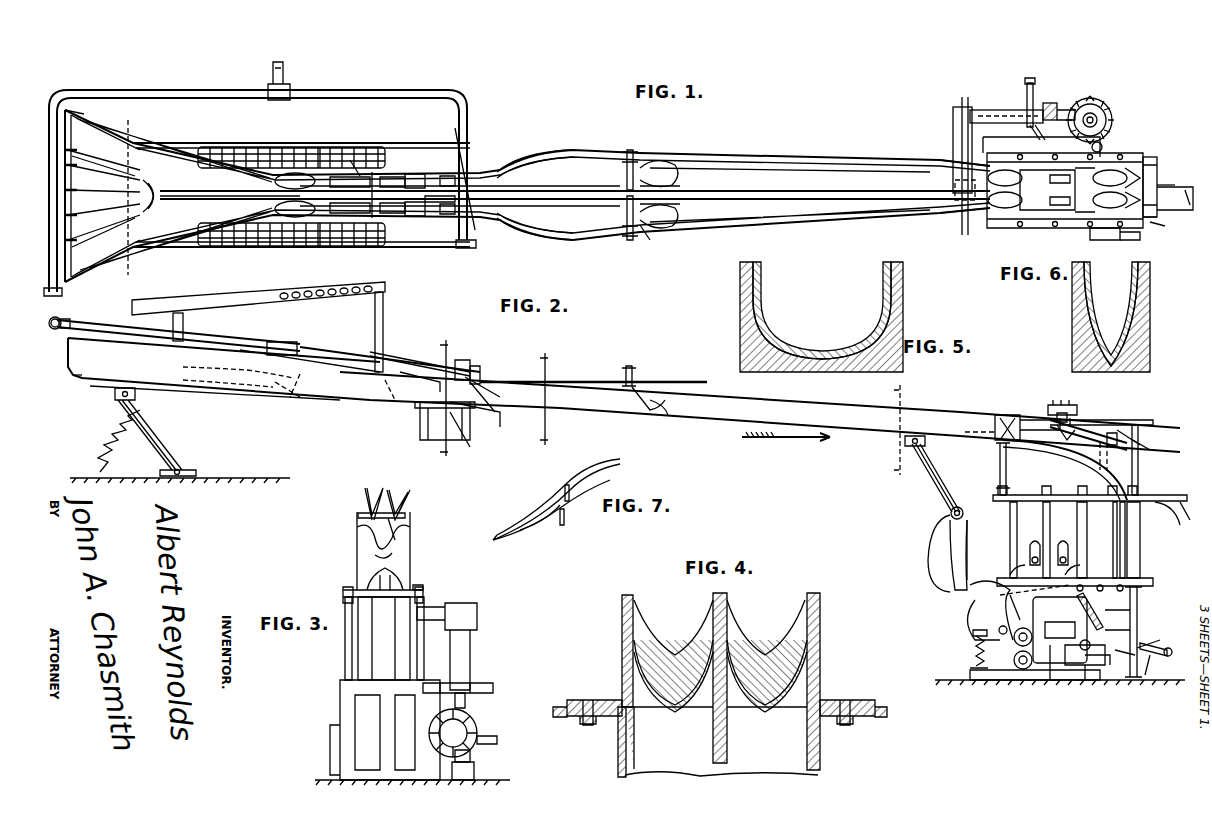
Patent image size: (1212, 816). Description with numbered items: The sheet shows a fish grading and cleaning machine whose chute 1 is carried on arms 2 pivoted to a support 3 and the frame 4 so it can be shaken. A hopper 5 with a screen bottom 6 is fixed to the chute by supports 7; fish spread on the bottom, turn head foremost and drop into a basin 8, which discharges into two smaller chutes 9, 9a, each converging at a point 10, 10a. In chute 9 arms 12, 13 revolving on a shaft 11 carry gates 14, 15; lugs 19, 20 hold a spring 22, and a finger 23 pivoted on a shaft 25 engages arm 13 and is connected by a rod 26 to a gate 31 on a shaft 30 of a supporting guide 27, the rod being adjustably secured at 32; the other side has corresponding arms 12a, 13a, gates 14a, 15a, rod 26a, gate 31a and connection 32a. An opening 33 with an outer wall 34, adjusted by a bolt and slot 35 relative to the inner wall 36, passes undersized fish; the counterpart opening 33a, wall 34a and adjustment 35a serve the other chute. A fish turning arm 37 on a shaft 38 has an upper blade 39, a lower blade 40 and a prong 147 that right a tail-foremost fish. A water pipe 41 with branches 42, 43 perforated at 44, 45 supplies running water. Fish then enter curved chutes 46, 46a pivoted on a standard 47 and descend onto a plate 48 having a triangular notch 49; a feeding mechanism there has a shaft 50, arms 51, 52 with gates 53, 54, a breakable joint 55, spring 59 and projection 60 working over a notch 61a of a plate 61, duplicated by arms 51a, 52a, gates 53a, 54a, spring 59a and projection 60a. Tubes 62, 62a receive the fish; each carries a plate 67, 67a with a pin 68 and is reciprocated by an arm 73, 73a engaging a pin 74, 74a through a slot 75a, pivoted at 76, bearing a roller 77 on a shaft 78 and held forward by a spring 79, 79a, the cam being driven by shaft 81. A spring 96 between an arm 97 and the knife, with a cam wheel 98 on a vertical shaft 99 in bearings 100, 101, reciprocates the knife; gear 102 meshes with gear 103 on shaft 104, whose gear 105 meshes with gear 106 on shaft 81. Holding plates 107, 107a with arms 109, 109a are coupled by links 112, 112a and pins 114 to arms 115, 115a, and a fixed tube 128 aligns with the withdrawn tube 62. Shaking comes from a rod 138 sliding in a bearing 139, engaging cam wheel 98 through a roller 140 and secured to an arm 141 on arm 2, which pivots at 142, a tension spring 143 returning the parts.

In FIG. 2, the chute 1 is at (846, 432).
In FIG. 4, the chute 1 is at (622, 632).
In FIG. 5, the chute 1 is at (740, 341).
In FIG. 6, the chute 1 is at (1150, 336).
In FIG. 2, the arms 2 is at (925, 482).
In FIG. 2, the support 3 is at (220, 478).
In FIG. 1, the frame 4 is at (1003, 228).
In FIG. 2, the frame 4 is at (1010, 531).
In FIG. 3, the frame 4 is at (345, 640).
In FIG. 1, the hopper 5 is at (340, 176).
In FIG. 2, the hopper 5 is at (544, 400).
In FIG. 1, the screen bottom 6 is at (355, 176).
In FIG. 2, the screen bottom 6 is at (330, 298).
In FIG. 1, the supports 7 is at (380, 218).
In FIG. 2, the supports 7 is at (375, 328).
In FIG. 1, the basin 8 is at (92, 250).
In FIG. 2, the basin 8 is at (90, 380).
In FIG. 1, the chute 9 is at (766, 238).
In FIG. 5, the chute 9 is at (758, 298).
In FIG. 6, the chute 9 is at (1136, 291).
In FIG. 1, the chute 9a is at (766, 140).
In FIG. 1, the point 10 is at (268, 248).
In FIG. 1, the point 10a is at (258, 147).
In FIG. 1, the shaft 11 is at (364, 160).
In FIG. 2, the shaft 11 is at (358, 385).
In FIG. 1, the arm 12 is at (318, 246).
In FIG. 2, the arm 12 is at (323, 392).
In FIG. 1, the arm 12a is at (318, 147).
In FIG. 1, the arm 13 is at (412, 216).
In FIG. 2, the arm 13 is at (455, 365).
In FIG. 1, the arm 13a is at (412, 174).
In FIG. 1, the gate 14 is at (292, 217).
In FIG. 2, the gate 14 is at (300, 397).
In FIG. 1, the gate 14a is at (292, 173).
In FIG. 1, the gate 15 is at (398, 214).
In FIG. 2, the gate 15 is at (395, 400).
In FIG. 1, the gate 15a is at (400, 174).
In FIG. 2, the lug 19 is at (300, 350).
In FIG. 2, the lug 20 is at (398, 352).
In FIG. 2, the spring 22 is at (355, 364).
In FIG. 2, the finger 23 is at (470, 372).
In FIG. 1, the shaft 25 is at (428, 204).
In FIG. 2, the shaft 25 is at (421, 386).
In FIG. 1, the rod 26 is at (562, 240).
In FIG. 2, the rod 26 is at (575, 382).
In FIG. 1, the rod 26a is at (560, 150).
In FIG. 1, the supporting guide 27 is at (678, 178).
In FIG. 1, the shaft 30 is at (649, 239).
In FIG. 2, the shaft 30 is at (645, 387).
In FIG. 1, the gate 31 is at (672, 226).
In FIG. 2, the gate 31 is at (668, 415).
In FIG. 1, the gate 31a is at (672, 165).
In FIG. 1, the adjustable connection 32 is at (628, 240).
In FIG. 2, the adjustable connection 32 is at (629, 368).
In FIG. 1, the adjustable connection 32a is at (630, 150).
In FIG. 1, the opening 33 is at (448, 214).
In FIG. 2, the opening 33 is at (428, 433).
In FIG. 4, the opening 33 is at (673, 686).
In FIG. 1, the opening 33a is at (446, 176).
In FIG. 4, the opening 33a is at (767, 686).
In FIG. 2, the outer side wall 34 is at (470, 433).
In FIG. 4, the outer side wall 34 is at (618, 749).
In FIG. 4, the outer side wall 34a is at (820, 741).
In FIG. 4, the bolt and slot arrangement 35 is at (590, 700).
In FIG. 4, the bolt and slot arrangement 35a is at (845, 700).
In FIG. 4, the inner wall 36 is at (713, 738).
In FIG. 2, the fish turning arm 37 is at (490, 378).
In FIG. 7, the fish turning arm 37 is at (560, 494).
In FIG. 2, the shaft 38 is at (492, 416).
In FIG. 7, the shaft 38 is at (566, 515).
In FIG. 2, the upper blade 39 is at (500, 378).
In FIG. 7, the upper blade 39 is at (596, 462).
In FIG. 2, the lower blade 40 is at (478, 450).
In FIG. 7, the lower blade 40 is at (510, 535).
In FIG. 1, the water pipe 41 is at (215, 90).
In FIG. 2, the water pipe 41 is at (244, 340).
In FIG. 1, the branch 42 is at (80, 138).
In FIG. 2, the branch 42 is at (62, 330).
In FIG. 1, the branch 43 is at (470, 136).
In FIG. 1, the perforations 44 is at (72, 196).
In FIG. 1, the perforations 45 is at (458, 134).
In FIG. 1, the curved chute 46 is at (1000, 210).
In FIG. 2, the curved chute 46 is at (1060, 452).
In FIG. 3, the curved chute 46 is at (366, 494).
In FIG. 1, the curved chute 46a is at (1003, 170).
In FIG. 3, the curved chute 46a is at (408, 508).
In FIG. 2, the standard 47 is at (1000, 467).
In FIG. 1, the plate 48 is at (1157, 160).
In FIG. 2, the plate 48 is at (1170, 496).
In FIG. 3, the plate 48 is at (415, 582).
In FIG. 1, the triangular notch 49 is at (1157, 170).
In FIG. 1, the shaft 50 is at (1055, 212).
In FIG. 2, the shaft 50 is at (1066, 434).
In FIG. 1, the arm 51 is at (1020, 225).
In FIG. 2, the arm 51 is at (1030, 418).
In FIG. 2, the arm 51a is at (1000, 415).
In FIG. 1, the arm 52 is at (1136, 239).
In FIG. 2, the arm 52 is at (1108, 430).
In FIG. 1, the arm 52a is at (1138, 172).
In FIG. 2, the arm 52a is at (1130, 428).
In FIG. 1, the gate 53 is at (1000, 215).
In FIG. 2, the gate 53 is at (995, 420).
In FIG. 1, the gate 53a is at (1000, 165).
In FIG. 2, the gate 53a is at (1010, 415).
In FIG. 1, the gate 54 is at (1118, 212).
In FIG. 2, the gate 54 is at (1130, 445).
In FIG. 1, the gate 54a is at (1120, 172).
In FIG. 2, the gate 54a is at (1110, 462).
In FIG. 2, the breakable joint 55 is at (1057, 400).
In FIG. 1, the spring 59 is at (1080, 218).
In FIG. 2, the spring 59 is at (1065, 413).
In FIG. 2, the spring 59a is at (1078, 420).
In FIG. 1, the projection 60 is at (1153, 226).
In FIG. 2, the projection 60 is at (1153, 420).
In FIG. 3, the projection 60 is at (358, 518).
In FIG. 1, the projection 60a is at (1176, 177).
In FIG. 2, the projection 60a is at (1154, 450).
In FIG. 3, the projection 60a is at (406, 526).
In FIG. 1, the plate 61 is at (1175, 198).
In FIG. 2, the plate 61 is at (1139, 480).
In FIG. 3, the plate 61 is at (410, 546).
In FIG. 3, the notch 61a is at (377, 561).
In FIG. 2, the tube 62 is at (1130, 538).
In FIG. 3, the tube 62 is at (365, 655).
In FIG. 3, the tube 62a is at (410, 645).
In FIG. 1, the plate 67 is at (1165, 228).
In FIG. 2, the plate 67 is at (1167, 513).
In FIG. 3, the plate 67 is at (355, 590).
In FIG. 3, the plate 67a is at (425, 586).
In FIG. 1, the pin 68 is at (1183, 198).
In FIG. 2, the pin 68 is at (1188, 512).
In FIG. 2, the arm 73 is at (970, 626).
In FIG. 2, the arm 73a is at (985, 592).
In FIG. 2, the pin 74 is at (1063, 545).
In FIG. 2, the pin 74a is at (1035, 545).
In FIG. 2, the slot 75a is at (1030, 552).
In FIG. 2, the pivot 76 is at (1025, 670).
In FIG. 3, the pivot 76 is at (330, 760).
In FIG. 2, the roller 77 is at (1022, 607).
In FIG. 2, the shaft 78 is at (996, 622).
In FIG. 2, the spring 79 is at (975, 660).
In FIG. 2, the spring 79a is at (973, 640).
In FIG. 1, the driving shaft 81 is at (1040, 128).
In FIG. 2, the driving shaft 81 is at (1017, 645).
In FIG. 1, the spring 96 is at (1083, 232).
In FIG. 1, the arm 97 is at (1100, 242).
In FIG. 2, the arm 97 is at (1100, 578).
In FIG. 1, the cam wheel 98 is at (1112, 110).
In FIG. 3, the cam wheel 98 is at (478, 683).
In FIG. 1, the vertical shaft 99 is at (1097, 115).
In FIG. 2, the vertical shaft 99 is at (1061, 619).
In FIG. 3, the vertical shaft 99 is at (470, 722).
In FIG. 3, the bearing 100 is at (465, 700).
In FIG. 3, the bearing 101 is at (474, 772).
In FIG. 2, the gear 102 is at (1085, 680).
In FIG. 3, the gear 102 is at (470, 755).
In FIG. 2, the gear 103 is at (1060, 630).
In FIG. 3, the gear 103 is at (498, 730).
In FIG. 2, the shaft 104 is at (1099, 644).
In FIG. 1, the gear 105 is at (1052, 103).
In FIG. 1, the gear 106 is at (1027, 100).
In FIG. 2, the plate 107 is at (1137, 614).
In FIG. 2, the plate 107a is at (1165, 656).
In FIG. 2, the arm 109 is at (1137, 600).
In FIG. 2, the arm 109a is at (1145, 646).
In FIG. 2, the links 112 is at (1158, 667).
In FIG. 2, the links 112a is at (1106, 611).
In FIG. 2, the pins 114 is at (1138, 660).
In FIG. 2, the arm 115 is at (1105, 665).
In FIG. 2, the arm 115a is at (1065, 676).
In FIG. 2, the tube 128 is at (1000, 592).
In FIG. 1, the rod 138 is at (968, 107).
In FIG. 2, the rod 138 is at (952, 588).
In FIG. 1, the bearing 139 is at (998, 110).
In FIG. 1, the roller 140 is at (1075, 108).
In FIG. 1, the arm 141 is at (962, 134).
In FIG. 2, the pivot 142 is at (950, 515).
In FIG. 2, the tension spring 143 is at (118, 454).
In FIG. 7, the prong 147 is at (525, 508).